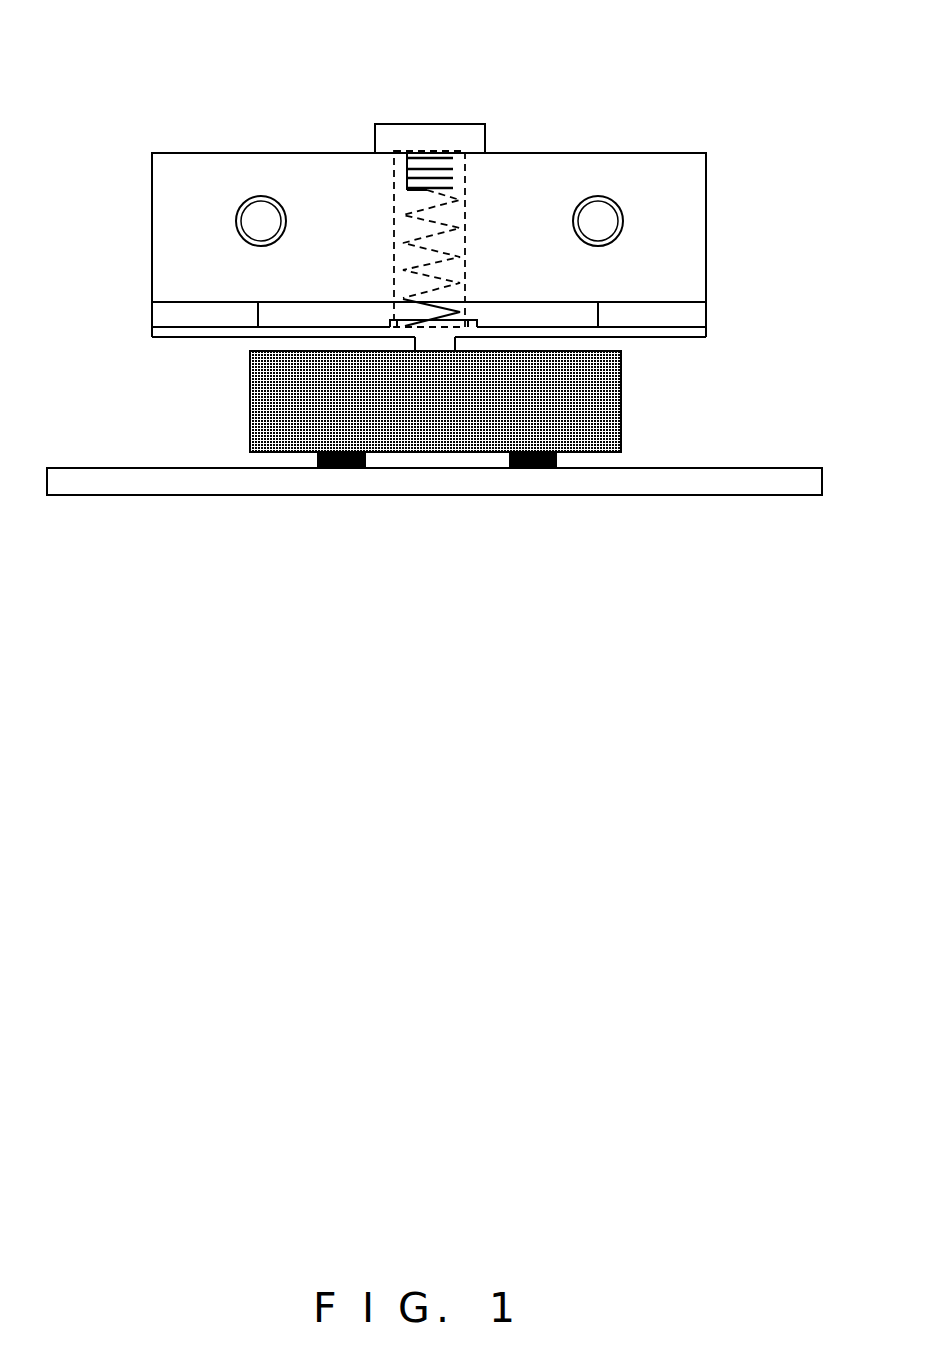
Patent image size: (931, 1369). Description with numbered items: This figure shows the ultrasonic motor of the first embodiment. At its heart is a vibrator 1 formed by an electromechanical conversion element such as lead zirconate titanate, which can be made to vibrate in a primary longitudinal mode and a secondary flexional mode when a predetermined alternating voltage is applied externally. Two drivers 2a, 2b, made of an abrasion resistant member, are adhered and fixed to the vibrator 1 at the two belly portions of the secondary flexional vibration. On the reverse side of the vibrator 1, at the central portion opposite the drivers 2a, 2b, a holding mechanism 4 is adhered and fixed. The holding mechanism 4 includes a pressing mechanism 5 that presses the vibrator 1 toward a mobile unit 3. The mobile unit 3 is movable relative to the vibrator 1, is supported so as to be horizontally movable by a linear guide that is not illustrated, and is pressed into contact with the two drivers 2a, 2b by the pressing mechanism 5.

The vibrator 1 is at (622, 382).
The driver 2a is at (558, 455).
The driver 2b is at (313, 458).
The mobile unit 3 is at (770, 467).
The holding mechanism 4 is at (722, 219).
The pressing mechanism 5 is at (443, 96).